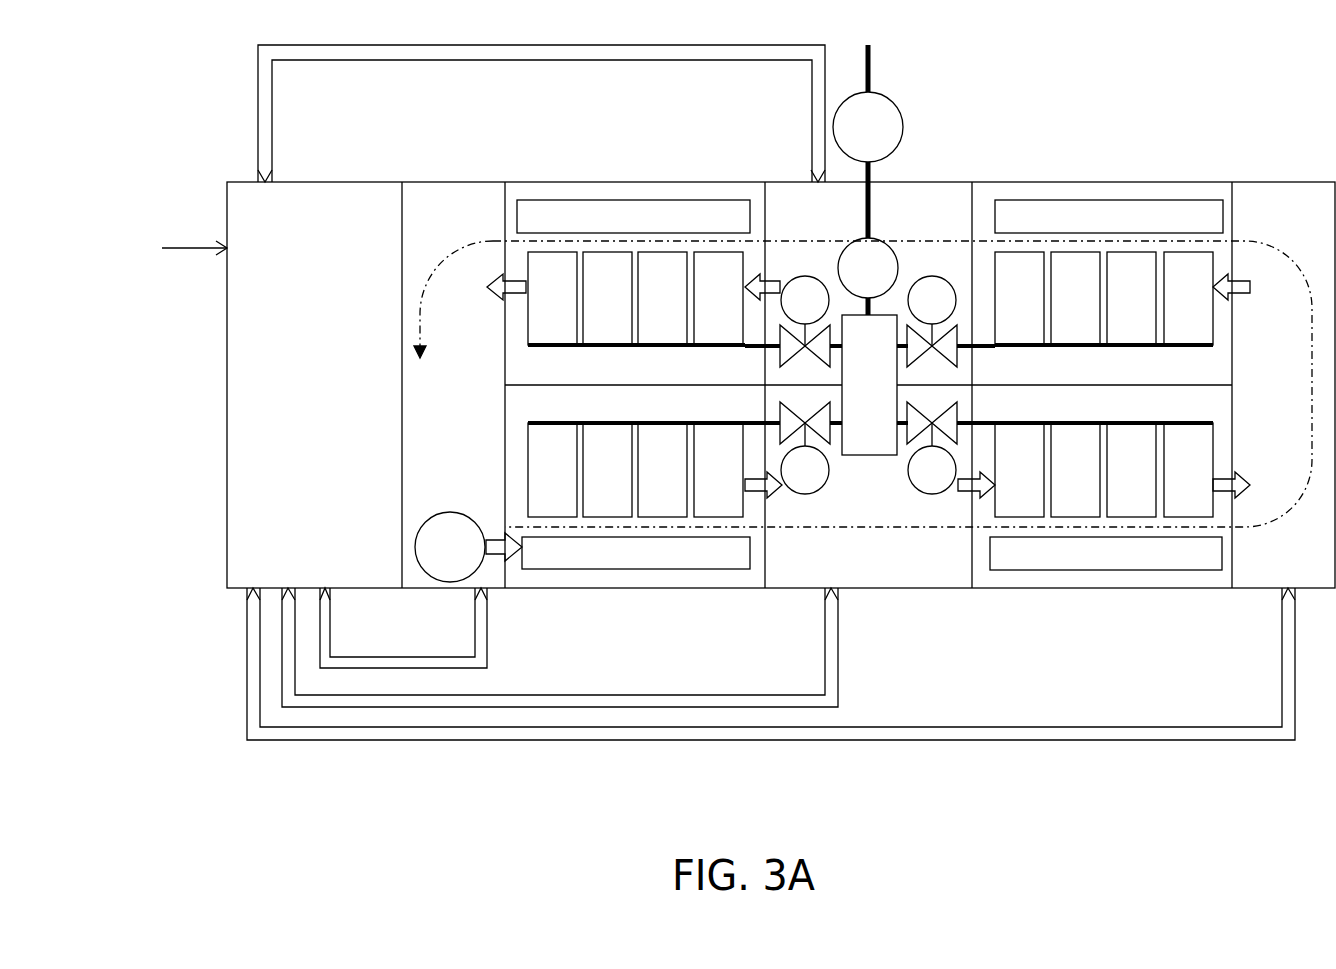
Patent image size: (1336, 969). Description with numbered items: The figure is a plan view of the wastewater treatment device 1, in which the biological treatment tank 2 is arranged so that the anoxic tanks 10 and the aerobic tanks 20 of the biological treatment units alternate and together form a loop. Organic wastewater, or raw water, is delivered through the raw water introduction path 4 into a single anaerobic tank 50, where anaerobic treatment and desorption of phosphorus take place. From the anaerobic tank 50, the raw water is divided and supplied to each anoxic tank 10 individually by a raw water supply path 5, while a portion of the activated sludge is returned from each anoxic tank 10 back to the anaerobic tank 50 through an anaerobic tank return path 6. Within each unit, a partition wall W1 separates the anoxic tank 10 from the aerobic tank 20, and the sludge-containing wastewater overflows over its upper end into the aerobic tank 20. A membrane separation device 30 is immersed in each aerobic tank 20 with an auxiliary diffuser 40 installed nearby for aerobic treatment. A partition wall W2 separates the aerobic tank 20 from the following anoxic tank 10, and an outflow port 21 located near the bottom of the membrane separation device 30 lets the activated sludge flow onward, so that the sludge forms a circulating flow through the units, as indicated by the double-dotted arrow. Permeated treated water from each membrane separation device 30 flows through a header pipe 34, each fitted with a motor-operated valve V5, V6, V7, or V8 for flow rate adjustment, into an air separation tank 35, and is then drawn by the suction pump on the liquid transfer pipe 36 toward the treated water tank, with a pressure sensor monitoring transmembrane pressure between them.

The wastewater treatment device 1 is at (982, 86).
The biological treatment tank 2 is at (1265, 181).
The raw water introduction path 4 is at (195, 256).
The raw water supply path 5 is at (390, 48).
The anaerobic tank return path 6 is at (432, 62).
The anoxic tank 10 is at (865, 385).
The aerobic tank 20 is at (868, 388).
The outflow port 21 is at (498, 276).
The membrane separation device 30 is at (713, 258).
The header pipe 34 is at (722, 350).
The air separation tank 35 is at (880, 443).
The liquid transfer pipe 36 is at (873, 84).
The auxiliary diffuser 40 is at (707, 214).
The anaerobic tank 50 is at (355, 385).
The valve V5 is at (802, 495).
The valve V6 is at (935, 495).
The valve V7 is at (936, 276).
The valve V8 is at (802, 276).
The partition wall W1 is at (1240, 350).
The partition wall W2 is at (500, 341).